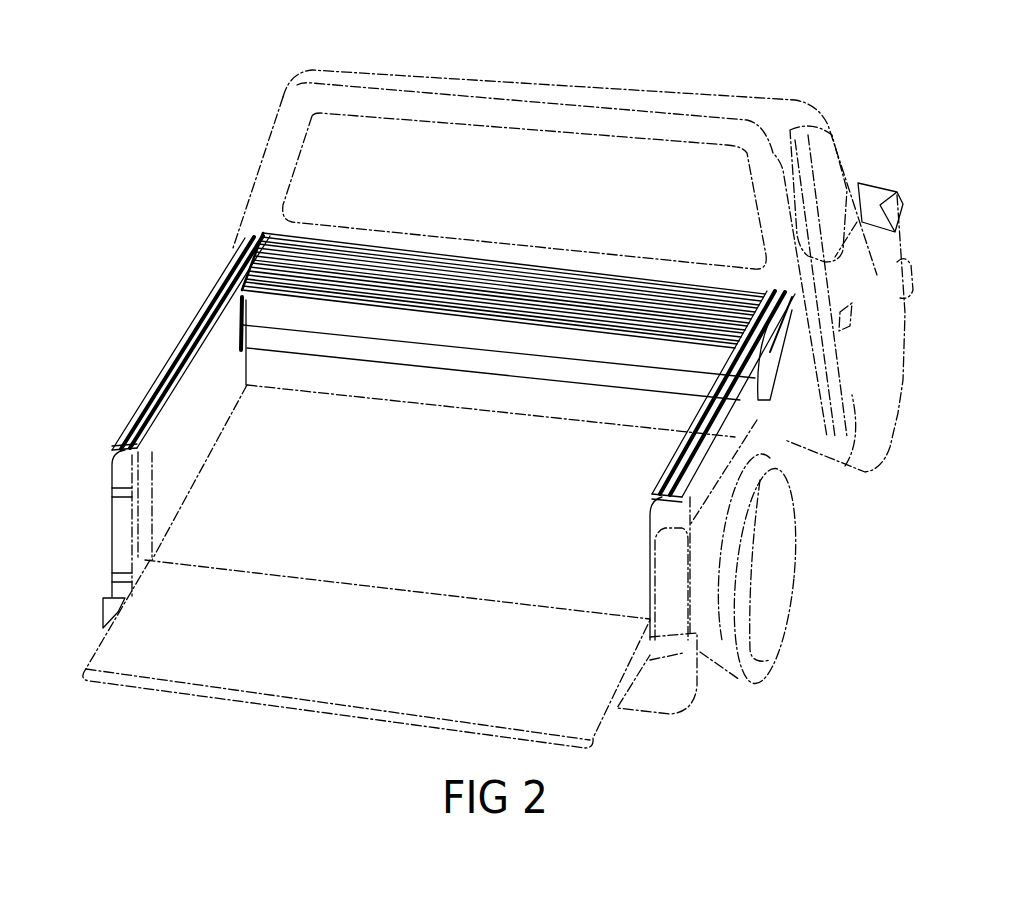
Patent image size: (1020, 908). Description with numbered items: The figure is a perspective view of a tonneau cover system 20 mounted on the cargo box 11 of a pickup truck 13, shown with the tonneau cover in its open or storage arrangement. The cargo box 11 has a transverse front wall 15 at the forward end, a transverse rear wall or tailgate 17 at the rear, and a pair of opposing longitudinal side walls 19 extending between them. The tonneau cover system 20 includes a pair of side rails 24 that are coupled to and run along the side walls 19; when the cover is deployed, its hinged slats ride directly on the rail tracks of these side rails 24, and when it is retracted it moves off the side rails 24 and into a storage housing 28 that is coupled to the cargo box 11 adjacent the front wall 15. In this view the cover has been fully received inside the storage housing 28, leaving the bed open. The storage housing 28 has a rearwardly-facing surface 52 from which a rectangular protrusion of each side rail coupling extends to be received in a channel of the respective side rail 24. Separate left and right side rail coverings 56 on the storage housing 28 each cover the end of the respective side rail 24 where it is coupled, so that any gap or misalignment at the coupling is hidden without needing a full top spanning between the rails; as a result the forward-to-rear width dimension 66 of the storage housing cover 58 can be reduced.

The cargo box 11 is at (186, 538).
The pickup truck 13 is at (568, 78).
The front wall 15 is at (772, 225).
The tailgate 17 is at (337, 680).
The side walls 19 is at (120, 462).
The tonneau cover system 20 is at (453, 368).
The side rails 24 is at (170, 413).
The storage housing 28 is at (403, 352).
The rearwardly-facing surface 52 is at (467, 341).
The side rail coverings 56 is at (258, 236).
The storage housing cover 58 is at (415, 247).
The width dimension 66 is at (578, 250).